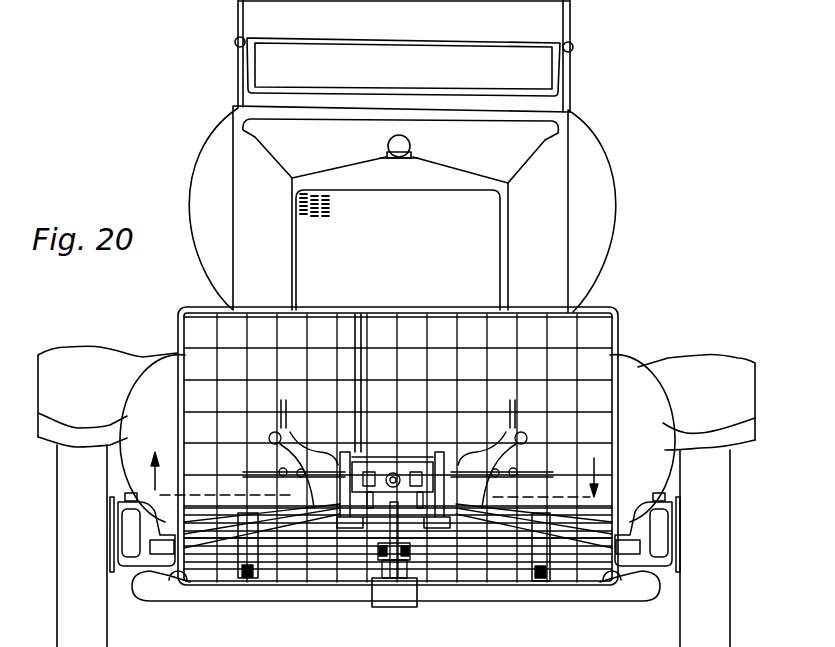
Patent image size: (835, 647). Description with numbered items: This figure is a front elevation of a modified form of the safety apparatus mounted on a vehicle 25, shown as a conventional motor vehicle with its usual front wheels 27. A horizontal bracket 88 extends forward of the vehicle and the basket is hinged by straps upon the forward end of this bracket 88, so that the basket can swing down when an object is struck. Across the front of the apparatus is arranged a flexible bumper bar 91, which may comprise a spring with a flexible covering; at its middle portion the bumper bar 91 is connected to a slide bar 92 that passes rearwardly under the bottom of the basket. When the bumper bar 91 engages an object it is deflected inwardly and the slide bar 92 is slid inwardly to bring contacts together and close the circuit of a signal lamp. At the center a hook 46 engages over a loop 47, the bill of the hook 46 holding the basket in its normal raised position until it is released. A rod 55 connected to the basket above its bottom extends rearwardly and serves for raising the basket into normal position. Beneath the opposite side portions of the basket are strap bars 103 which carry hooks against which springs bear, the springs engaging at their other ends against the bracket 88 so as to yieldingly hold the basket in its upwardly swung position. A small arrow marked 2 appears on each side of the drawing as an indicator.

The section indicator 2 is at (368, 481).
The vehicle 25 is at (552, 249).
The front wheels 27 is at (735, 511).
The hook 46 is at (392, 512).
The loop 47 is at (420, 527).
The rod 55 is at (338, 478).
The horizontal bracket 88 is at (582, 528).
The flexible bumper bar 91 is at (298, 595).
The slide bar 92 is at (395, 607).
The strap bars 103 is at (538, 550).